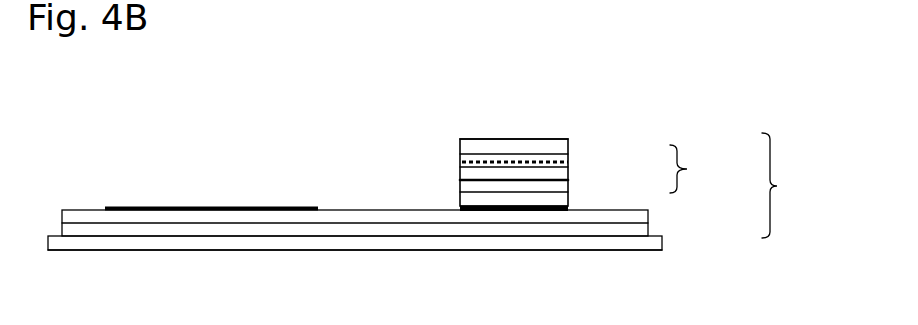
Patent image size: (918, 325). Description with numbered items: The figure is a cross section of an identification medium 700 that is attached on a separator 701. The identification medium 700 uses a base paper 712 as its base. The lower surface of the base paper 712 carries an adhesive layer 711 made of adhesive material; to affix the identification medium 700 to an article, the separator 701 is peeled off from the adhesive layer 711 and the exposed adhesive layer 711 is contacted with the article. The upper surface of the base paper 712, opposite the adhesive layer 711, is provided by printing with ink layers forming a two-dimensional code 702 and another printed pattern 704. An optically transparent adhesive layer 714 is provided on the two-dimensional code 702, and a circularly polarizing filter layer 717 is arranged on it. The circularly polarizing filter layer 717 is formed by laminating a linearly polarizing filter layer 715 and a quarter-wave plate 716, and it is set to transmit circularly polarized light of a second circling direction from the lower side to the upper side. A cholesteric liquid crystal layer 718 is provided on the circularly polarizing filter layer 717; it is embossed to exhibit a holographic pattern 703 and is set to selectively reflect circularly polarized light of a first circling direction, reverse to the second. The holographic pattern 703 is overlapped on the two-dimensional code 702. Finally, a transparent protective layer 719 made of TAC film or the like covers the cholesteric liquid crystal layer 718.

The identification medium 700 is at (794, 185).
The separator 701 is at (398, 245).
The two-dimensional code figure 702 is at (503, 213).
The holographic figure 703 is at (499, 161).
The printed figure 704 is at (202, 207).
The adhesive layer 711 is at (642, 230).
The base paper 712 is at (642, 217).
The optically transparent adhesive layer 714 is at (466, 198).
The linearly polarizing filter layer 715 is at (562, 187).
The λ/4 plate 716 is at (562, 172).
The circularly polarizing filter layer 717 is at (703, 169).
The cholesteric liquid crystal layer 718 is at (548, 155).
The transparent protective layer 719 is at (478, 147).